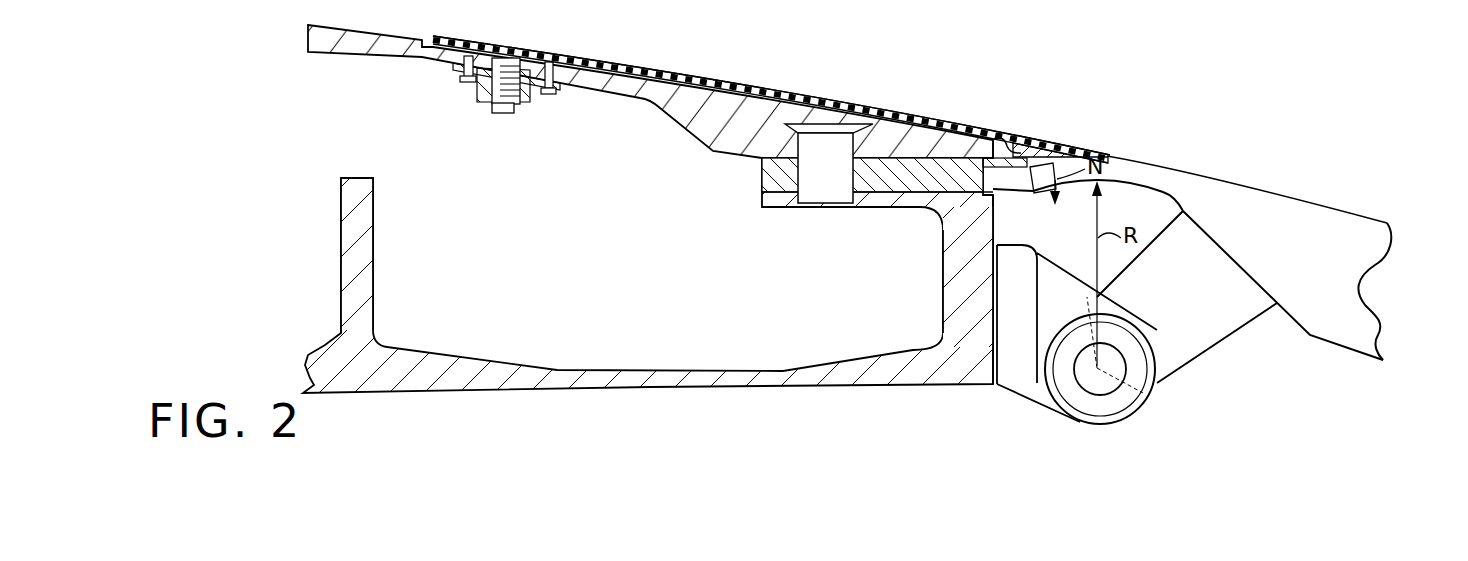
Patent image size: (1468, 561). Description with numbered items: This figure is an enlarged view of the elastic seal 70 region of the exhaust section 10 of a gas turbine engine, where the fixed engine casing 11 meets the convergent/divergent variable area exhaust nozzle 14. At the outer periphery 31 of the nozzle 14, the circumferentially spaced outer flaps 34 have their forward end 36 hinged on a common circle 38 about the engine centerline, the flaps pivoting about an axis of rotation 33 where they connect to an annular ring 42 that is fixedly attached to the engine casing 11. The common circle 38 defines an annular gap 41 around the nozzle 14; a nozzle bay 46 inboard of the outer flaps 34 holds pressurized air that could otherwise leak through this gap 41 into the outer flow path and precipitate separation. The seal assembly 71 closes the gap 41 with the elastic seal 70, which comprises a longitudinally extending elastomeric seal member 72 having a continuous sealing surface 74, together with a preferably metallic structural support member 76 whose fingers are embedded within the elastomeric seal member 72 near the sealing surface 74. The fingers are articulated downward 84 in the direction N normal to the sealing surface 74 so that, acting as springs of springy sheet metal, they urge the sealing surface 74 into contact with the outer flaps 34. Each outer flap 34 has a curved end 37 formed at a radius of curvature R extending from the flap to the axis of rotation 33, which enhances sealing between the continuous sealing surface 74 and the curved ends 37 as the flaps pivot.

The exhaust section 10 is at (653, 414).
The engine casing 11 is at (467, 357).
The variable area exhaust nozzle 14 is at (1072, 86).
The outer periphery 31 is at (985, 402).
The axis of rotation 33 is at (1128, 405).
The outer flaps 34 is at (1307, 202).
The forward end 36 is at (1288, 320).
The curved end 37 is at (1123, 162).
The common circle 38 is at (1110, 361).
The annular gap 41 is at (1018, 205).
The annular ring 42 is at (943, 280).
The nozzle bay 46 is at (1362, 417).
The elastic seal 70 is at (823, 205).
The seal assembly 71 is at (1037, 44).
The elastomeric seal member 72 is at (1003, 128).
The continuous sealing surface 74 is at (1045, 166).
The structural support member 76 is at (818, 205).
The downward articulation 84 is at (970, 108).